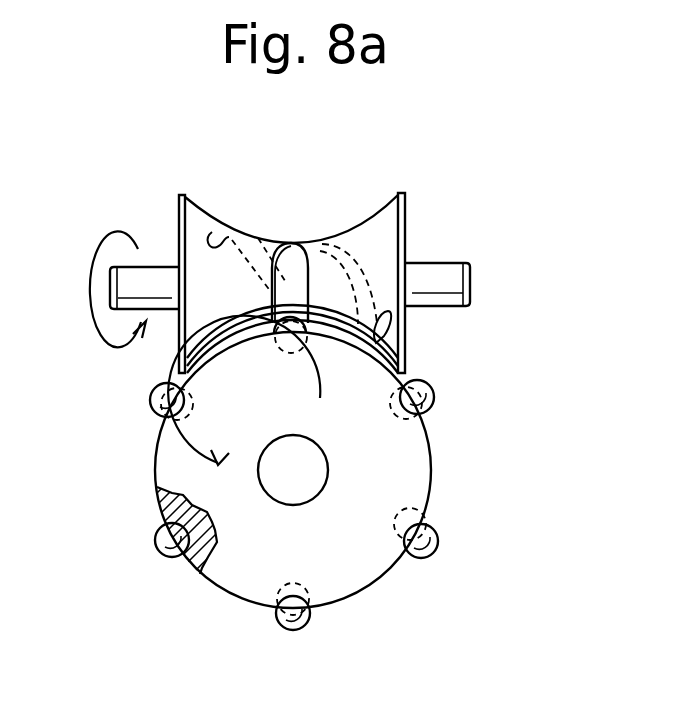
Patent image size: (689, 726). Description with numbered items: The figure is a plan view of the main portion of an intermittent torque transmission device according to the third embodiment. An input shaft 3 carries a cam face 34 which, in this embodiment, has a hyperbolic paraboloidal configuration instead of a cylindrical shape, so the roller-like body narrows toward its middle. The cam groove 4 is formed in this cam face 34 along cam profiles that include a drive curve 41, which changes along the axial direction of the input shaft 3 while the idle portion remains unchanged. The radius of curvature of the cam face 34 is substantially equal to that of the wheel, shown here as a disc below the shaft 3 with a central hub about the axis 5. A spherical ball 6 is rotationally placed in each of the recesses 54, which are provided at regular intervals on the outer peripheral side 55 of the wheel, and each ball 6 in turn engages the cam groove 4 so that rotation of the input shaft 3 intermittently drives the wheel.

The input shaft 3 is at (413, 205).
The cam groove 4 is at (291, 258).
The shaft 5 is at (300, 468).
The ball 6 is at (157, 393).
The cam face 34 is at (373, 218).
The drive curve 41 is at (365, 568).
The recess 54 is at (160, 500).
The outer peripheral side 55 is at (433, 452).